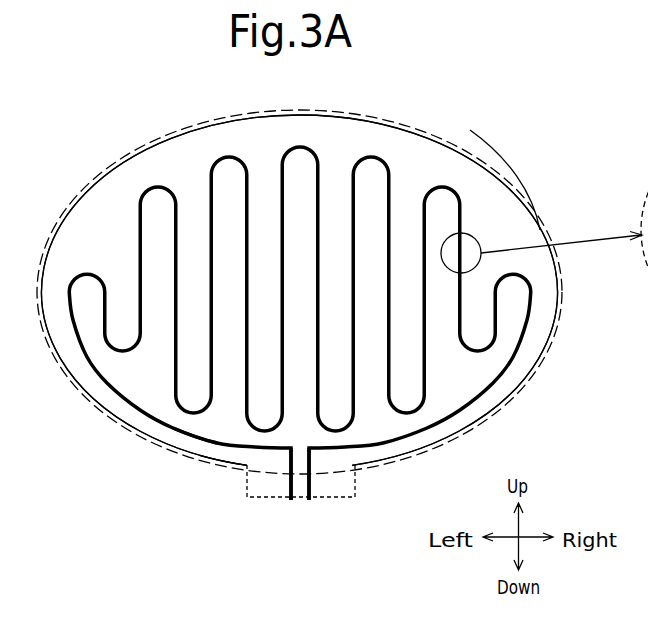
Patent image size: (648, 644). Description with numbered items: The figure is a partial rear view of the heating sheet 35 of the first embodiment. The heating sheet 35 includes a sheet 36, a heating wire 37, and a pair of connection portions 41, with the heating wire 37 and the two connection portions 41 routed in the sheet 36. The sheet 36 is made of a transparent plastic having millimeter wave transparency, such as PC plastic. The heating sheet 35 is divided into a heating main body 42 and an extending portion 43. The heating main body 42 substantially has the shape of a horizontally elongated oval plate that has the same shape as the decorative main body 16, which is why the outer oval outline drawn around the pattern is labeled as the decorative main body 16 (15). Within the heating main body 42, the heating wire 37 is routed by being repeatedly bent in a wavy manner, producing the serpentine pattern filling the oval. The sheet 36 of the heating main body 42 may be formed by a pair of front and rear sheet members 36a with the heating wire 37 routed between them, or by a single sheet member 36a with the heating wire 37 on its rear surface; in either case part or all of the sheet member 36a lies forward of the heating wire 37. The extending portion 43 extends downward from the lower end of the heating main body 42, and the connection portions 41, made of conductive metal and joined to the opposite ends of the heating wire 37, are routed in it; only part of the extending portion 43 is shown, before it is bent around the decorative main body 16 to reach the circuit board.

The decorative main body 16 is at (207, 121).
The mirror unit 15 is at (299, 290).
The sheet 36 is at (299, 290).
The sheet member 36a is at (520, 218).
The heating wire 37 is at (452, 181).
The heating sheet 35 is at (128, 462).
The heating main body 42 is at (184, 440).
The extending portion 43 is at (247, 470).
The connection portion 41 is at (300, 499).